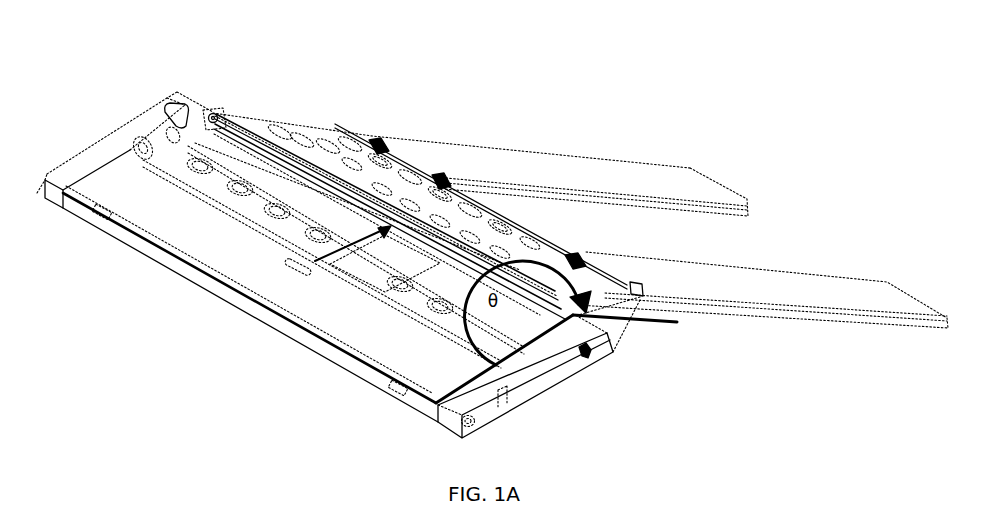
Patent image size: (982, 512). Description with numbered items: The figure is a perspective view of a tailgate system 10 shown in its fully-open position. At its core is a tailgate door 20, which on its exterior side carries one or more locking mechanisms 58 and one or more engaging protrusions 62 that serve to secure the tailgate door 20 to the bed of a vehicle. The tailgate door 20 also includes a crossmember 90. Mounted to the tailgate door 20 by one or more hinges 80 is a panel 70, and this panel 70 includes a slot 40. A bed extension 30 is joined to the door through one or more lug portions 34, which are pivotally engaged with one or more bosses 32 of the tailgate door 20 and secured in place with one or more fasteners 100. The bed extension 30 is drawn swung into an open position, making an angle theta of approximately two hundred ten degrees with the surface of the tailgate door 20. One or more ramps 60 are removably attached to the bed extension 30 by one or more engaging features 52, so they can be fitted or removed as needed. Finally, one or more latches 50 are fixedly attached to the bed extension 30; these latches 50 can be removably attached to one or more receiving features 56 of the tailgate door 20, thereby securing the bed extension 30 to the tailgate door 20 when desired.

The tailgate system 10 is at (476, 80).
The tailgate door 20 is at (147, 128).
The bed extension 30 is at (296, 130).
The bosses 32 is at (178, 123).
The lug portions 34 is at (213, 112).
The slot 40 is at (300, 273).
The latches 50 is at (632, 325).
The engaging features 52 is at (373, 140).
The receiving features 56 is at (144, 154).
The locking mechanisms 58 is at (586, 357).
The ramps 60 is at (590, 172).
The engaging protrusions 62 is at (492, 361).
The panel 70 is at (190, 242).
The hinges 80 is at (97, 212).
The crossmember 90 is at (283, 255).
The fasteners 100 is at (250, 124).